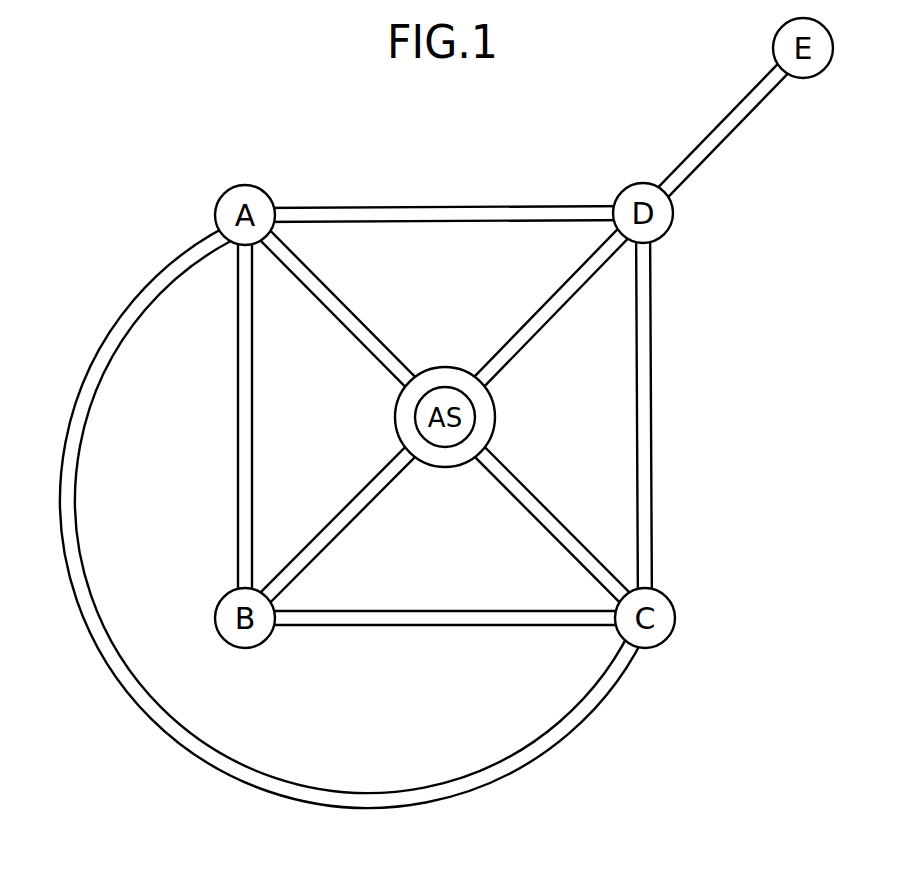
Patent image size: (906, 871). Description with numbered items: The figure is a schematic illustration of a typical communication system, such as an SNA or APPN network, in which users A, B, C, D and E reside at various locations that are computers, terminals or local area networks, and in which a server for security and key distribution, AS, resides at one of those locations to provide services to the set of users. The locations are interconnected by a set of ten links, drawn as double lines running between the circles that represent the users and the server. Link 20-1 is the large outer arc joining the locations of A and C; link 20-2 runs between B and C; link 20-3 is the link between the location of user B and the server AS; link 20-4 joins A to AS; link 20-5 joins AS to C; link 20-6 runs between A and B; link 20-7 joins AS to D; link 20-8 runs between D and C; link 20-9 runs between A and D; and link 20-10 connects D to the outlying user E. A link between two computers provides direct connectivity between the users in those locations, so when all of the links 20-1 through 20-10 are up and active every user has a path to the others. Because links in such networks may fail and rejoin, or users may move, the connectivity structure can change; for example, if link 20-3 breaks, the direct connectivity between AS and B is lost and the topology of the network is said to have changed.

The link 20-1 is at (95, 332).
The link 20-2 is at (443, 633).
The link 20-3 is at (365, 513).
The link 20-4 is at (370, 328).
The link 20-5 is at (545, 508).
The link 20-6 is at (235, 435).
The link 20-7 is at (547, 325).
The link 20-8 is at (657, 418).
The link 20-9 is at (373, 207).
The link 20-10 is at (702, 175).